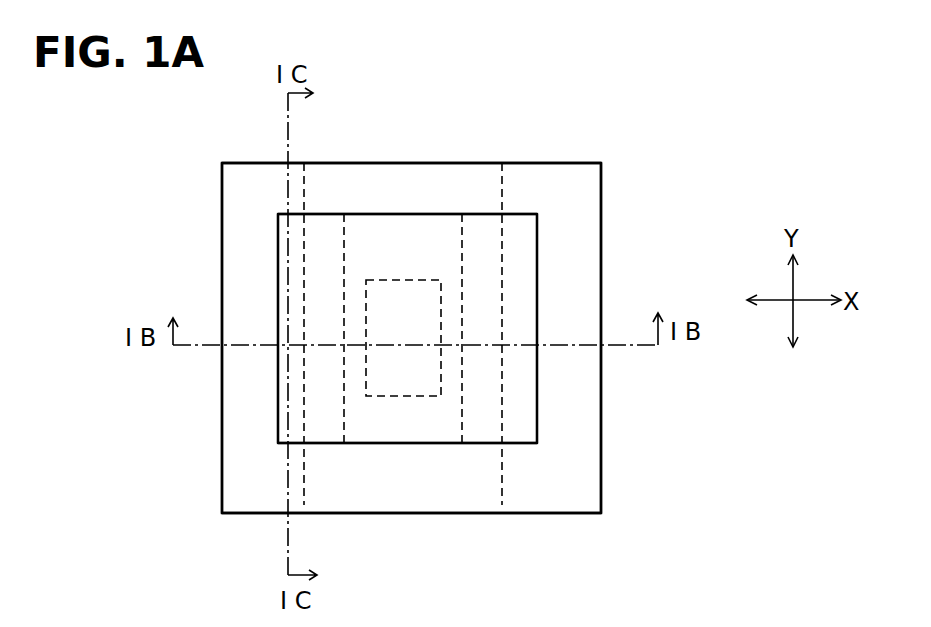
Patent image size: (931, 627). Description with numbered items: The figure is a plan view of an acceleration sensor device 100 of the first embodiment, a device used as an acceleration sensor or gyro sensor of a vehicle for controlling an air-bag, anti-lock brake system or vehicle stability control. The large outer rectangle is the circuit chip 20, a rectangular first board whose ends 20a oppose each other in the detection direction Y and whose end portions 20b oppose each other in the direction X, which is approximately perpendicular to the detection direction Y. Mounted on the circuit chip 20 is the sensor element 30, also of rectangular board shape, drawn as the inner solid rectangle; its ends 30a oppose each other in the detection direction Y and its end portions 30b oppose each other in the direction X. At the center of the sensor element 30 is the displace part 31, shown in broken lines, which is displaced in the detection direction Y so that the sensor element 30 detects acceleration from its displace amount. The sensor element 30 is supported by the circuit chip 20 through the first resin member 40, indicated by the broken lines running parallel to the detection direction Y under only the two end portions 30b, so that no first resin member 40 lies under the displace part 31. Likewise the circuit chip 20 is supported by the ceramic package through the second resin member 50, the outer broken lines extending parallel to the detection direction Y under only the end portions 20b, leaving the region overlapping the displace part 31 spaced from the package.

The acceleration sensor device 100 is at (222, 163).
The circuit chip 20 is at (575, 265).
The ends of circuit chip 20a is at (473, 163).
The end portions of circuit chip 20b is at (222, 432).
The sensor element 30 is at (523, 258).
The ends of sensor element 30a is at (420, 213).
The end portions of sensor element 30b is at (278, 387).
The displace part 31 is at (381, 280).
The first resin member 40 is at (344, 428).
The second resin member 50 is at (304, 470).